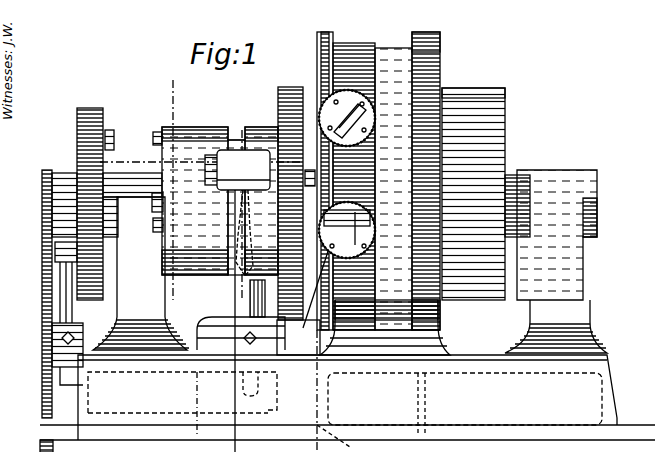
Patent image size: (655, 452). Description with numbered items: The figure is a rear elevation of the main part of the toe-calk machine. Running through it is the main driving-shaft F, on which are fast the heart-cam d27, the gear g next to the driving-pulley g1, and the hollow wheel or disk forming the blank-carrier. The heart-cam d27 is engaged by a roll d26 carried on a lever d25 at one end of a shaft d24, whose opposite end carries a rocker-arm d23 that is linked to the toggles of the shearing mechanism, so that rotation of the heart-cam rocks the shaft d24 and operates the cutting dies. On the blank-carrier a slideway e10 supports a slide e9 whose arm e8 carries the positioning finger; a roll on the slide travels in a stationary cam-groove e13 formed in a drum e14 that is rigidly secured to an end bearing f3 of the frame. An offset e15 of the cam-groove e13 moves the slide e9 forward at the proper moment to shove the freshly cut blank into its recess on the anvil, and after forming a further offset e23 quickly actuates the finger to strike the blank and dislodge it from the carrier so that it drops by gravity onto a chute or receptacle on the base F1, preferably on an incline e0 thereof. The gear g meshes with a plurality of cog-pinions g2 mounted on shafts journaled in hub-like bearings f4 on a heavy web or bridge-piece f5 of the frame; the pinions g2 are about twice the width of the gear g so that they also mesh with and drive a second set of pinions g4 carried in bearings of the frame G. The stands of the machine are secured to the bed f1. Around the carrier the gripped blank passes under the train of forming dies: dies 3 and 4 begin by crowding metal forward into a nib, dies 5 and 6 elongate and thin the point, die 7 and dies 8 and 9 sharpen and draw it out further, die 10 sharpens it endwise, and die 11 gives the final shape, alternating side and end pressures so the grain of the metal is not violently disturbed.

The die 3 is at (319, 40).
The die 4 is at (167, 180).
The die 5 is at (316, 70).
The die 6 is at (320, 118).
The die 7 is at (366, 118).
The die 8 is at (310, 178).
The die 9 is at (330, 216).
The die 10 is at (311, 290).
The die 11 is at (298, 339).
The gear frame column G is at (393, 189).
The main driving-shaft F is at (465, 190).
The base F1 is at (347, 397).
The base member e0 is at (343, 438).
The arm e8 is at (163, 226).
The slide e9 is at (222, 167).
The slideway e10 is at (185, 140).
The cam-groove e13 is at (238, 128).
The drum e14 is at (197, 130).
The offset e15 is at (233, 195).
The offset e23 is at (236, 233).
The rocker-arm d23 is at (240, 321).
The shaft d24 is at (47, 330).
The lever d25 is at (61, 285).
The roll d26 is at (57, 257).
The heart-cam d27 is at (78, 118).
The bed f1 is at (50, 239).
The end bearing f3 is at (141, 273).
The hub-like bearing f4 is at (441, 47).
The web or bridge-piece f5 is at (506, 100).
The gear g is at (455, 210).
The driving-pulley g1 is at (498, 92).
The cog-pinion g2 is at (441, 61).
The pinion g4 is at (497, 256).